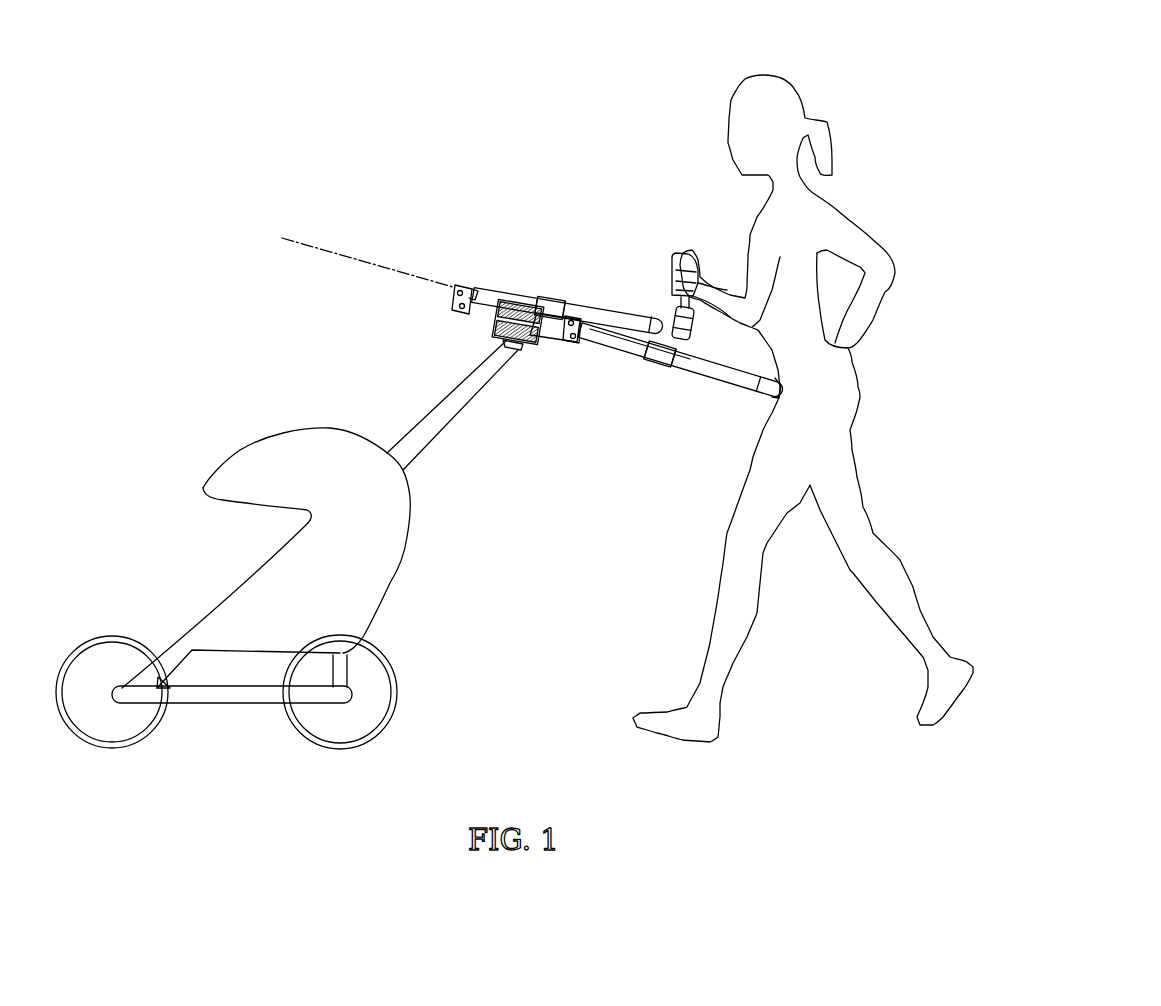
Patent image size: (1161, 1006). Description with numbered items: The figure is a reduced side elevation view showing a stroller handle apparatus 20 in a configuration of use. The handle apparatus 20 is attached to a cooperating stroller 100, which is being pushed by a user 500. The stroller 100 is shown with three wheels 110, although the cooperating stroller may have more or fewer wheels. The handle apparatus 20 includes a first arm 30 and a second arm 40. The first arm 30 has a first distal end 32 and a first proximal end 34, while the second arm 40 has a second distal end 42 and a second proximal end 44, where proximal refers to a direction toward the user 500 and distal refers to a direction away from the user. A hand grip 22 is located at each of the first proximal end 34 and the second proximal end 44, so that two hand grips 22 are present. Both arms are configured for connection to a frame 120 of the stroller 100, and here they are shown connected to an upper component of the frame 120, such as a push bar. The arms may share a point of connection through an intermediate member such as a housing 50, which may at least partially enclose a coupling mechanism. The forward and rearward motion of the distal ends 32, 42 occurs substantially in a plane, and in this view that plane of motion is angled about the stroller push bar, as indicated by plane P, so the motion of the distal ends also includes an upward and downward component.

The handle apparatus 20 is at (383, 185).
The hand grip 22 is at (690, 250).
The first arm 30 is at (530, 255).
The first distal end 32 is at (453, 302).
The first proximal end 34 is at (657, 298).
The second arm 40 is at (657, 427).
The second distal end 42 is at (583, 333).
The second proximal end 44 is at (750, 411).
The housing 50 is at (475, 342).
The stroller 100 is at (192, 413).
The wheels 110 is at (100, 632).
The frame 120 is at (460, 420).
The user 500 is at (895, 95).
The plane P is at (320, 253).